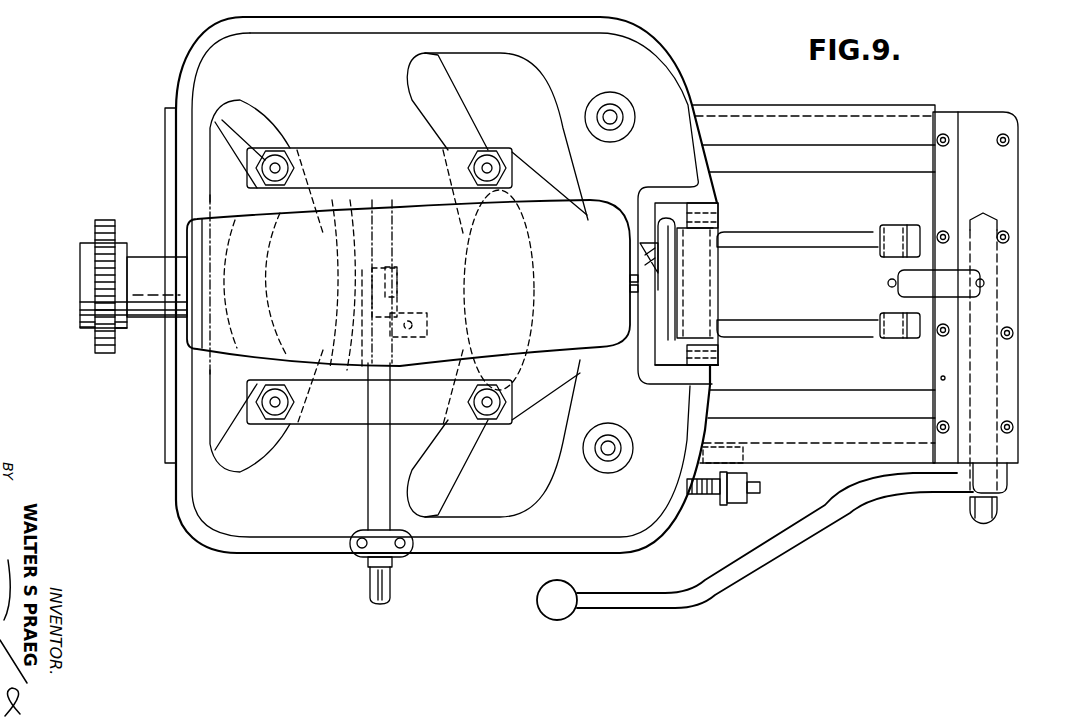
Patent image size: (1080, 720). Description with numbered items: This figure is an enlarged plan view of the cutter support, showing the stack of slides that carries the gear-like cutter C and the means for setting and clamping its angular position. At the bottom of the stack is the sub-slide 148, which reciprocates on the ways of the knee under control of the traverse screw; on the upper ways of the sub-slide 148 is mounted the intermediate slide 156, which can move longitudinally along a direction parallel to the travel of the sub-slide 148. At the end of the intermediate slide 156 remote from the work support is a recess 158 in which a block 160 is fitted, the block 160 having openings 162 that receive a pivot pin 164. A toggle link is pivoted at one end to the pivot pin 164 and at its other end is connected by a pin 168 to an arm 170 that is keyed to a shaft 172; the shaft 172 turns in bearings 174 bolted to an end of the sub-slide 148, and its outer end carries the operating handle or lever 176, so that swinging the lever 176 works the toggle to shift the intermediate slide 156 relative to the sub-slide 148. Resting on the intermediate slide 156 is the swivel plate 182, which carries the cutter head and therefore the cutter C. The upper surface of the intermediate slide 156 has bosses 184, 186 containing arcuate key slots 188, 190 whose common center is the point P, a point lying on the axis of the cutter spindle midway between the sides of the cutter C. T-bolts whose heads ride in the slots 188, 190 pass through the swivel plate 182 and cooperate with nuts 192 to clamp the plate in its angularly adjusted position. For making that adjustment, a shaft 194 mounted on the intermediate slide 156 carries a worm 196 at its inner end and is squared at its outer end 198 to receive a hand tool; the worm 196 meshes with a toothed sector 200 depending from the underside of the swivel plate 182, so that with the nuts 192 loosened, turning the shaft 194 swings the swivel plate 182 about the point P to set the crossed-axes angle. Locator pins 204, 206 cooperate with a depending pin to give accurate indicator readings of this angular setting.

The sub-slide 148 is at (848, 465).
The intermediate slide 156 is at (688, 97).
The recess 158 is at (720, 213).
The block 160 is at (720, 356).
The openings 162 is at (690, 368).
The pivot pin 164 is at (718, 300).
The pin 168 is at (894, 225).
The arm 170 is at (913, 338).
The shaft 172 is at (1000, 385).
The bearings 174 is at (1010, 217).
The operating handle or lever 176 is at (835, 534).
The swivel plate 182 is at (380, 148).
The boss 184 is at (277, 120).
The boss 186 is at (408, 72).
The arcuate key slot 188 is at (240, 118).
The arcuate key slot 190 is at (458, 94).
The nuts 192 is at (505, 158).
The shaft 194 is at (368, 483).
The worm 196 is at (400, 295).
The squared end 198 is at (393, 588).
The toothed sector 200 is at (362, 243).
The locator pin 204 is at (614, 92).
The locator pin 206 is at (611, 473).
The point P is at (105, 300).
The cutter C is at (108, 220).